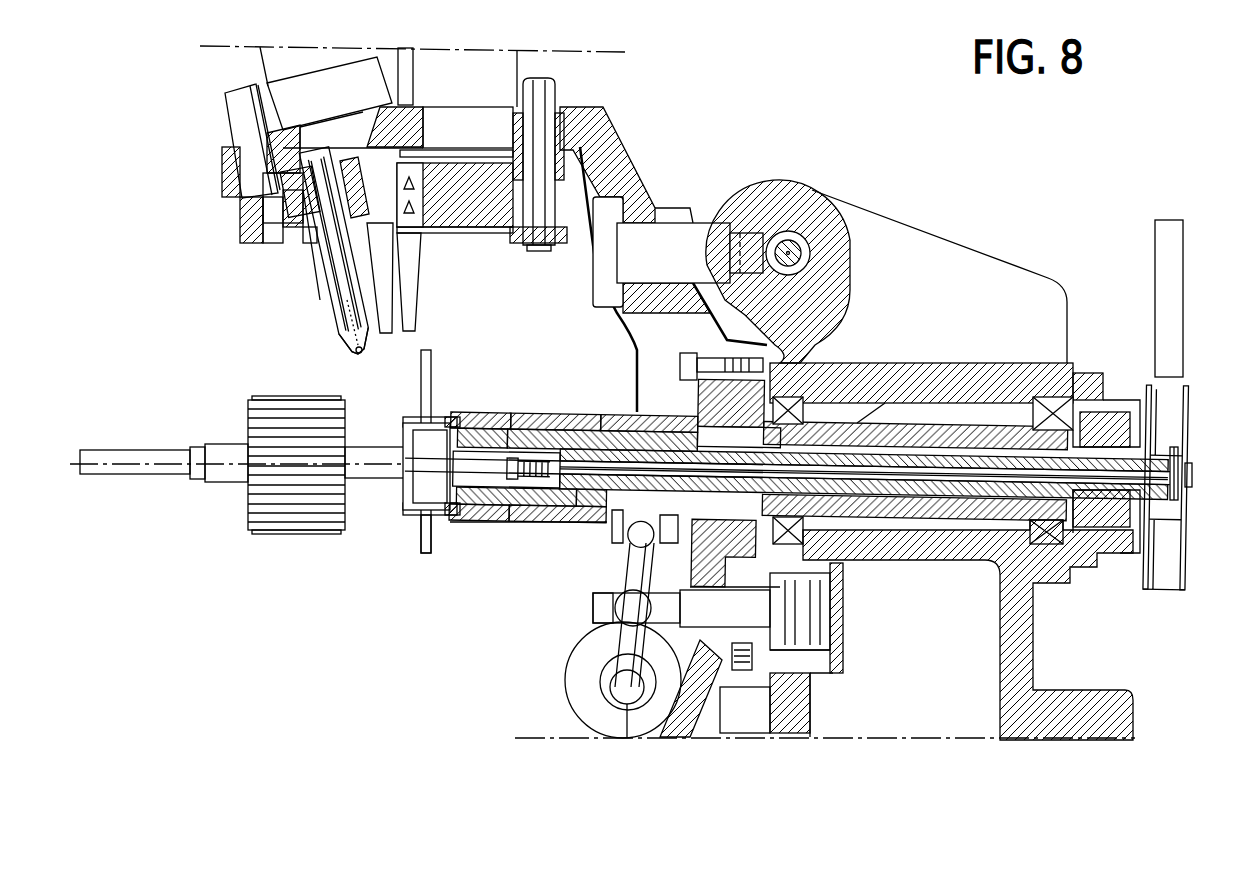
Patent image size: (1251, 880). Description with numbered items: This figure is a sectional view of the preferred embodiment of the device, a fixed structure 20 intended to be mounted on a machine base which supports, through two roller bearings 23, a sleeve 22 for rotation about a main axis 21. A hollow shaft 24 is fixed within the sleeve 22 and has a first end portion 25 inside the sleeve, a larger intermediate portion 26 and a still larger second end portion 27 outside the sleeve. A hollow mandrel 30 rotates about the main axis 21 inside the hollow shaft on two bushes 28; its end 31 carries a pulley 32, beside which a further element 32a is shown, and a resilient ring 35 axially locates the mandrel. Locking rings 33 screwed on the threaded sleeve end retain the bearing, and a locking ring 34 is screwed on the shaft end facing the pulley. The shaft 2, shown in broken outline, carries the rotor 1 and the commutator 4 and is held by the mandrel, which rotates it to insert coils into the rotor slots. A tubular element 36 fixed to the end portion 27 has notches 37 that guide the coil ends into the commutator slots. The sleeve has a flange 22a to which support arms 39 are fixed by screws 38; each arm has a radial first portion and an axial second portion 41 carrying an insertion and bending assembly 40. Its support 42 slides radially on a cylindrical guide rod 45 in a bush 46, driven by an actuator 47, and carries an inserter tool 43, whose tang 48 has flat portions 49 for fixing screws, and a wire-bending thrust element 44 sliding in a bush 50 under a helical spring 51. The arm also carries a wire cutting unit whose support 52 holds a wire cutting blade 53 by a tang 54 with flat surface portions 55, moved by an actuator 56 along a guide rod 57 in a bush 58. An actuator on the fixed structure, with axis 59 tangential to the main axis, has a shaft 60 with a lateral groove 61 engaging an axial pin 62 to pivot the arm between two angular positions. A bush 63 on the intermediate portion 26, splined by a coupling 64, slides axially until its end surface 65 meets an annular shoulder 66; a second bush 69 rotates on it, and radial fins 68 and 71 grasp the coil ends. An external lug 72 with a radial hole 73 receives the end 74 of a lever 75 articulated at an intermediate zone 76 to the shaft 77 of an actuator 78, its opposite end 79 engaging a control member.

The rotor 1 is at (255, 512).
The shaft 2 is at (135, 476).
The commutator 4 is at (423, 477).
The fixed structure 20 is at (897, 230).
The main axis 21 is at (118, 452).
The sleeve 22 is at (933, 397).
The flange 22a is at (860, 412).
The roller bearings 23 is at (843, 420).
The hollow shaft 24 is at (905, 440).
The first end portion 25 is at (1010, 470).
The intermediate portion 26 is at (577, 437).
The second end portion 27 is at (467, 413).
The bushes 28 is at (553, 420).
The hollow mandrel 30 is at (963, 487).
The end of mandrel 31 is at (1176, 447).
The pulley 32 is at (480, 523).
The belt 32a is at (1160, 383).
The locking rings 33 is at (413, 503).
The locking ring 34 is at (440, 450).
The resilient ring 35 is at (1017, 397).
The tubular element 36 is at (452, 540).
The notches 37 is at (407, 420).
The screws 38 is at (680, 363).
The support arms 39 is at (645, 168).
The insertion and bending assembly 40 is at (318, 303).
The second portion 41 is at (416, 52).
The support 42 is at (247, 223).
The inserter tool 43 is at (353, 330).
The wire-bending thrust element 44 is at (352, 357).
The cylindrical guide rod 45 is at (240, 117).
The bush 46 is at (280, 203).
The actuator 47 is at (280, 93).
The tang 48 is at (273, 177).
The flat portions 49 is at (352, 197).
The bush 50 is at (323, 280).
The helical spring 51 is at (340, 327).
The support 52 is at (490, 145).
The wire cutting blade 53 is at (410, 267).
The tang 54 is at (403, 127).
The flat surface portions 55 is at (447, 223).
The actuator 56 is at (495, 68).
The guide rod 57 is at (553, 93).
The bush 58 is at (567, 120).
The actuator axis 59 is at (790, 243).
The actuator shaft 60 is at (800, 232).
The lateral groove 61 is at (777, 193).
The axial pin 62 is at (660, 247).
The bush 63 is at (617, 423).
The splined coupling 64 is at (557, 527).
The end surface 65 is at (500, 417).
The annular shoulder 66 is at (510, 522).
The radial fins 68 is at (437, 543).
The second bush 69 is at (627, 535).
The radial fins 71 is at (421, 374).
The external lug 72 is at (657, 530).
The radial hole 73 is at (622, 563).
The lever end 74 is at (648, 545).
The lever 75 is at (595, 650).
The intermediate zone 76 is at (607, 600).
The actuator shaft 77 is at (810, 673).
The actuator 78 is at (860, 613).
The lever end 79 is at (613, 702).